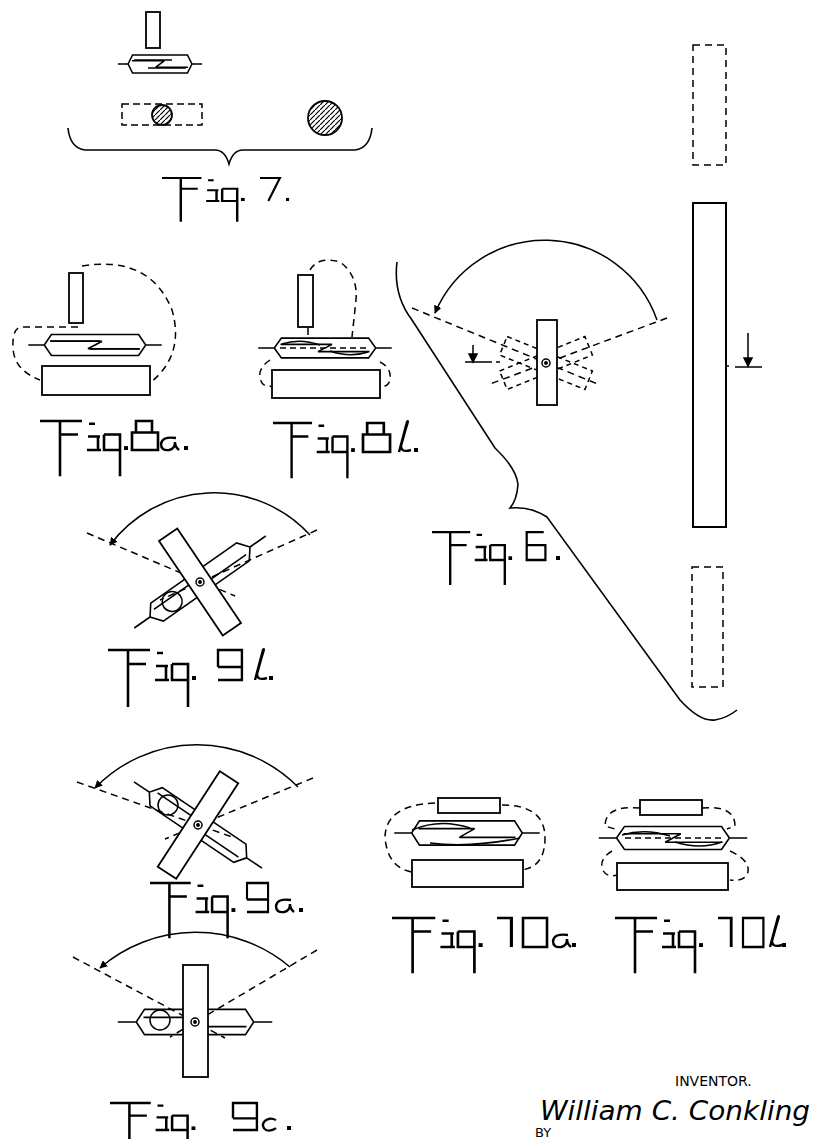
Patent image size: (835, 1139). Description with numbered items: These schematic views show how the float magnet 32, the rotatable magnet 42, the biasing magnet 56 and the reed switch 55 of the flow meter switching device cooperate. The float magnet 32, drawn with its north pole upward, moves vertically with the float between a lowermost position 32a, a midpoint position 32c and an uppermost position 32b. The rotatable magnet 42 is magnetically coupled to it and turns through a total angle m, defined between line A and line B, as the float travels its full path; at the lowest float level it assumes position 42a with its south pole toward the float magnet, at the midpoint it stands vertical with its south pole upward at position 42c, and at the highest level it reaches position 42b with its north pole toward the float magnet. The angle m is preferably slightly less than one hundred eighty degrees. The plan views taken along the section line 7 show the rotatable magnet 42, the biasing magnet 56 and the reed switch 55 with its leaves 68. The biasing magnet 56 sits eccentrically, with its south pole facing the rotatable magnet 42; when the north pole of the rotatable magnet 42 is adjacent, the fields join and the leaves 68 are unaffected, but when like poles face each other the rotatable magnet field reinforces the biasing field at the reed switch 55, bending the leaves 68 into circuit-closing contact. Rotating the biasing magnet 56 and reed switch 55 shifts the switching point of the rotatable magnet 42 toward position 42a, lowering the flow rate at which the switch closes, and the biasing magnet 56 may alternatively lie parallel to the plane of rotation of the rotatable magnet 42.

In FIG. 7, the reed switch 55 is at (172, 56).
In FIG. 8a, the reed switch 55 is at (130, 336).
In FIG. 8b, the reed switch 55 is at (350, 343).
In FIG. 9b, the reed switch 55 is at (236, 578).
In FIG. 9a, the reed switch 55 is at (247, 847).
In FIG. 9c, the reed switch 55 is at (253, 1010).
In FIG. 10a, the reed switch 55 is at (518, 822).
In FIG. 10b, the reed switch 55 is at (722, 828).
In FIG. 7, the biasing magnet 56 is at (146, 28).
In FIG. 8a, the biasing magnet 56 is at (69, 296).
In FIG. 8b, the biasing magnet 56 is at (298, 294).
In FIG. 9a, the biasing magnet 56 is at (175, 797).
In FIG. 9c, the biasing magnet 56 is at (164, 1010).
In FIG. 10a, the biasing magnet 56 is at (468, 797).
In FIG. 10b, the biasing magnet 56 is at (671, 807).
In FIG. 7, the leaves of the reed switch 68 is at (160, 78).
In FIG. 8a, the leaves of the reed switch 68 is at (106, 348).
In FIG. 8b, the leaves of the reed switch 68 is at (292, 342).
In FIG. 10a, the leaves of the reed switch 68 is at (418, 830).
In FIG. 10b, the leaves of the reed switch 68 is at (622, 840).
In FIG. 7, the rotatable magnet 42 is at (168, 105).
In FIG. 8a, the rotatable magnet 42 is at (137, 393).
In FIG. 8b, the rotatable magnet 42 is at (275, 392).
In FIG. 9b, the rotatable magnet 42 is at (238, 611).
In FIG. 9a, the rotatable magnet 42 is at (172, 845).
In FIG. 9c, the rotatable magnet 42 is at (200, 1050).
In FIG. 10a, the rotatable magnet 42 is at (415, 886).
In FIG. 10b, the rotatable magnet 42 is at (622, 888).
In FIG. 6, the rotatable magnet position at lowermost float position 42a is at (575, 340).
In FIG. 6, the rotatable magnet position at uppermost float position 42b is at (577, 394).
In FIG. 6, the rotatable magnet vertical midpoint position 42c is at (547, 319).
In FIG. 7, the float magnet 32 is at (320, 104).
In FIG. 6, the float magnet lowermost position 32a is at (692, 593).
In FIG. 6, the float magnet uppermost position 32b is at (693, 110).
In FIG. 6, the float magnet midpoint position 32c is at (693, 250).
In FIG. 6, the section line 7— 7 is at (608, 342).
In FIG. 6, the total angle of angular displacement m is at (530, 241).
In FIG. 9b, the total angle of angular displacement m is at (163, 509).
In FIG. 9a, the total angle of angular displacement m is at (160, 750).
In FIG. 9c, the total angle of angular displacement m is at (153, 938).
In FIG. 6, the line A is at (633, 333).
In FIG. 9b, the line A is at (292, 542).
In FIG. 9a, the line A is at (277, 796).
In FIG. 9c, the line A is at (273, 977).
In FIG. 6, the line B is at (423, 306).
In FIG. 9b, the line B is at (122, 552).
In FIG. 9a, the line B is at (112, 797).
In FIG. 9c, the line B is at (113, 980).